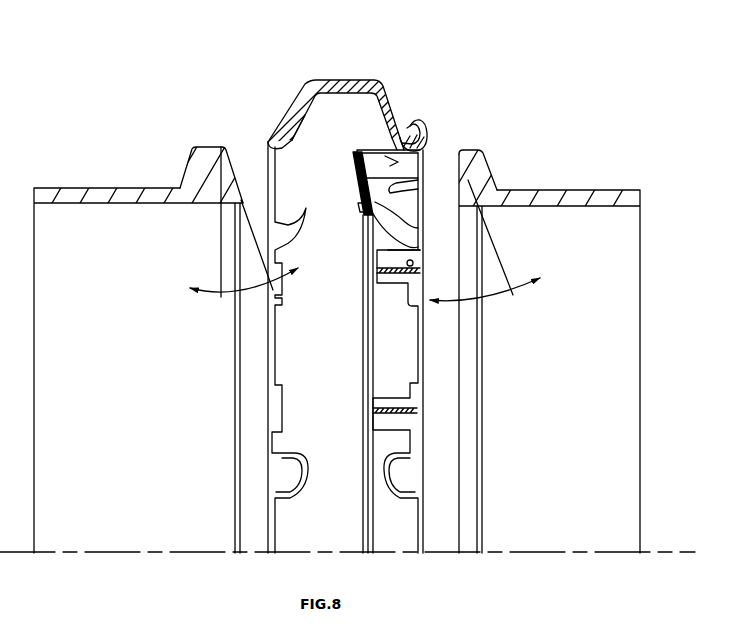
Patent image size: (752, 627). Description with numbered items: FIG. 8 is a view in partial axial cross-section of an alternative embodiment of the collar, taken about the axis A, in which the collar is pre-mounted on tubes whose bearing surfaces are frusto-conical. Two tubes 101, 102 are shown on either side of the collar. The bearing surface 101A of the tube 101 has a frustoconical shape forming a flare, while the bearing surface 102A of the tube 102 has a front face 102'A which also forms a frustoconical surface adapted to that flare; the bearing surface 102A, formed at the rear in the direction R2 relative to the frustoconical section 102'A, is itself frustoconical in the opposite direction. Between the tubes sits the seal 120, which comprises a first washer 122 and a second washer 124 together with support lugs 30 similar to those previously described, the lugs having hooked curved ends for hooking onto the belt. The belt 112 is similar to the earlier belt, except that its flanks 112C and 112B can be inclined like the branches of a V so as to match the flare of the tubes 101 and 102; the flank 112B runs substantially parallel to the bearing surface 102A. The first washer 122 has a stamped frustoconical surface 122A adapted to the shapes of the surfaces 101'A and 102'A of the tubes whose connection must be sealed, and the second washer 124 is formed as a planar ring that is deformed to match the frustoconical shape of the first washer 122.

The tube 101 is at (560, 338).
The bearing surface of tube 101 101A is at (489, 170).
The surface of tube 101 101'A is at (511, 237).
The tube 102 is at (154, 343).
The bearing surface of tube 102 102A is at (185, 168).
The front face 102'A is at (245, 188).
The belt 112 is at (404, 78).
The flank of the belt 112B is at (294, 110).
The flank of the belt 112C is at (398, 110).
The seal 120 is at (350, 309).
The first washer 122 is at (379, 172).
The stamped frustoconical surface 122A is at (402, 230).
The second washer 124 is at (352, 158).
The support lugs 30 is at (445, 127).
The direction R2 is at (150, 111).
The axis A is at (673, 552).